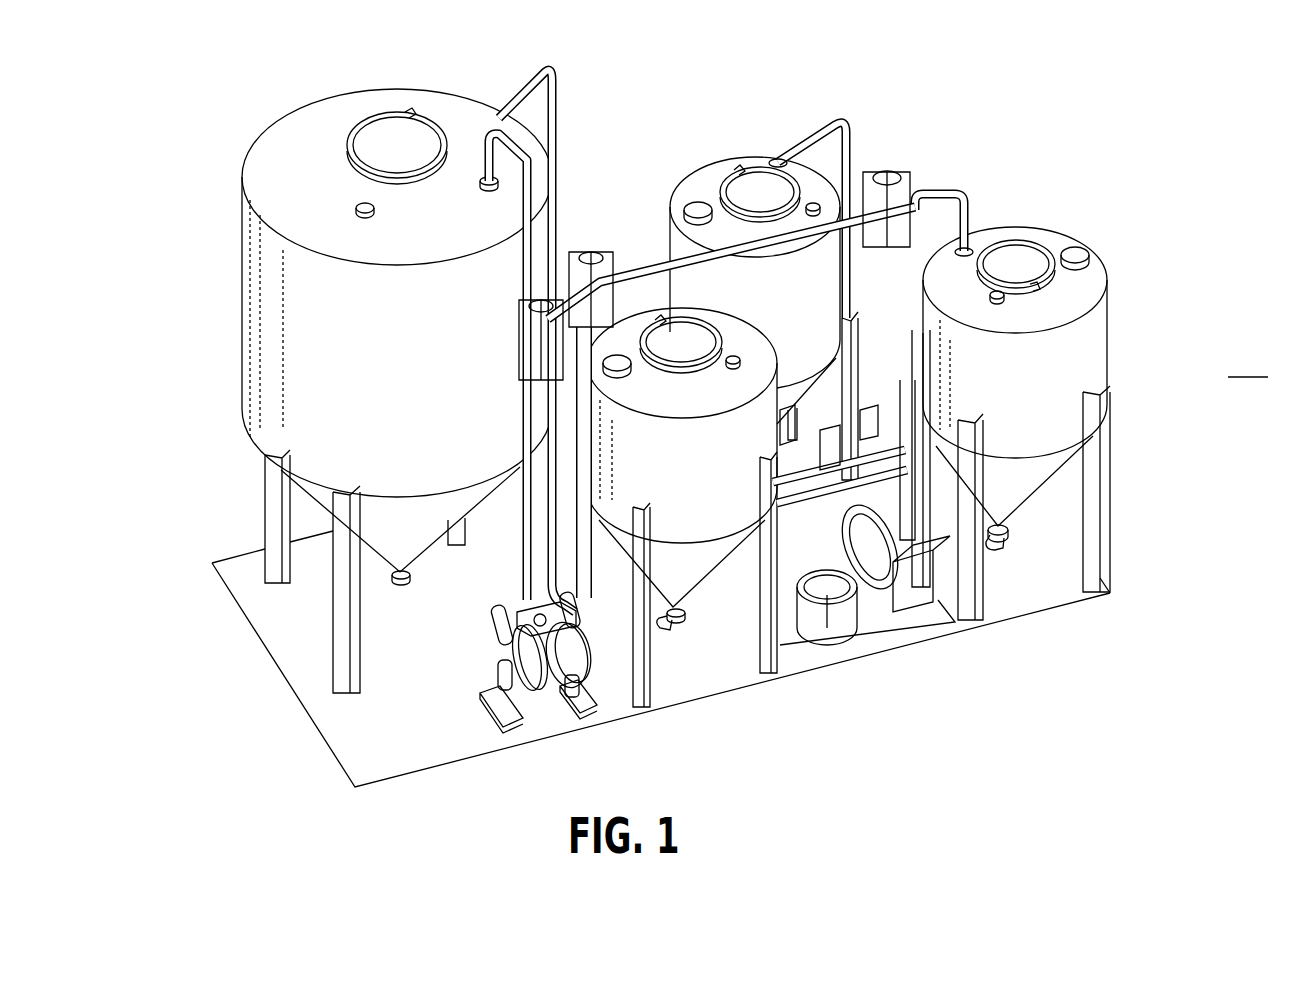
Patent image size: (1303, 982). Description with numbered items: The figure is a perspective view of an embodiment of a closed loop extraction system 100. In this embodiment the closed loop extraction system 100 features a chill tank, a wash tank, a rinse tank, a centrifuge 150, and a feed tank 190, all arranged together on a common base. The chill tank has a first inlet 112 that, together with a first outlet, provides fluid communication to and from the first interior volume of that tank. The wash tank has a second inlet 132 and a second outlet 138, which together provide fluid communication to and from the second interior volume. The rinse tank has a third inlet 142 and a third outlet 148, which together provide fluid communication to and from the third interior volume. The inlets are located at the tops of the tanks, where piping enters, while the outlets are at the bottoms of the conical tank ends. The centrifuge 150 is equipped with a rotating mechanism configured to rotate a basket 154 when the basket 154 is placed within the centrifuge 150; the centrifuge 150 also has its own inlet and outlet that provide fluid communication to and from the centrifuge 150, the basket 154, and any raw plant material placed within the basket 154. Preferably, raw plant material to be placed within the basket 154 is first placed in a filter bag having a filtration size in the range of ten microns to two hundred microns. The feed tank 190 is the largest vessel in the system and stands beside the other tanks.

The closed loop extraction system 100 is at (874, 401).
The first inlet 112 is at (776, 162).
The second inlet 132 is at (968, 241).
The second outlet 138 is at (1005, 548).
The third inlet 142 is at (703, 322).
The third outlet 148 is at (676, 632).
The centrifuge 150 is at (923, 652).
The basket 154 is at (827, 590).
The feed tank 190 is at (193, 295).